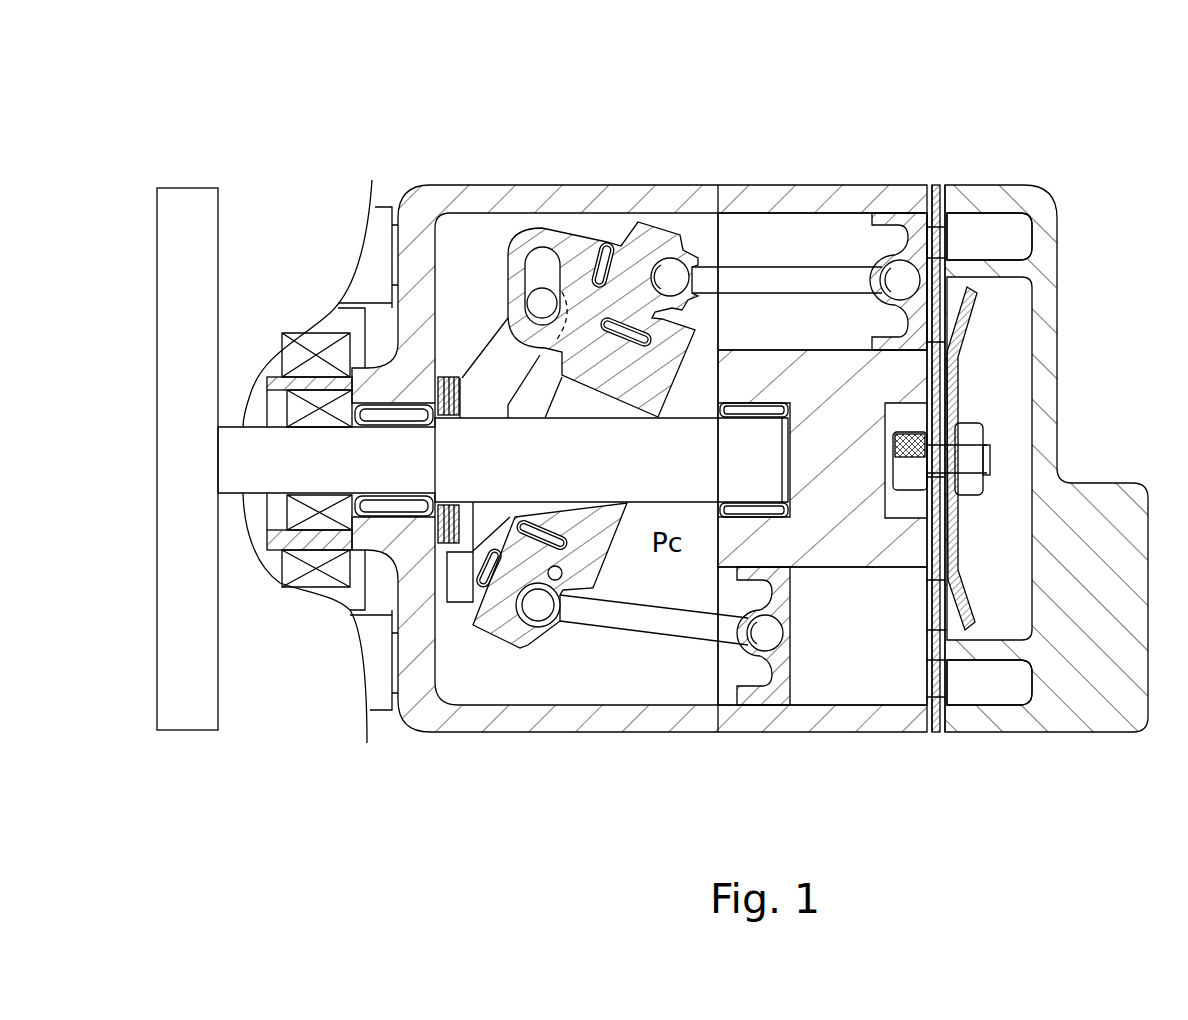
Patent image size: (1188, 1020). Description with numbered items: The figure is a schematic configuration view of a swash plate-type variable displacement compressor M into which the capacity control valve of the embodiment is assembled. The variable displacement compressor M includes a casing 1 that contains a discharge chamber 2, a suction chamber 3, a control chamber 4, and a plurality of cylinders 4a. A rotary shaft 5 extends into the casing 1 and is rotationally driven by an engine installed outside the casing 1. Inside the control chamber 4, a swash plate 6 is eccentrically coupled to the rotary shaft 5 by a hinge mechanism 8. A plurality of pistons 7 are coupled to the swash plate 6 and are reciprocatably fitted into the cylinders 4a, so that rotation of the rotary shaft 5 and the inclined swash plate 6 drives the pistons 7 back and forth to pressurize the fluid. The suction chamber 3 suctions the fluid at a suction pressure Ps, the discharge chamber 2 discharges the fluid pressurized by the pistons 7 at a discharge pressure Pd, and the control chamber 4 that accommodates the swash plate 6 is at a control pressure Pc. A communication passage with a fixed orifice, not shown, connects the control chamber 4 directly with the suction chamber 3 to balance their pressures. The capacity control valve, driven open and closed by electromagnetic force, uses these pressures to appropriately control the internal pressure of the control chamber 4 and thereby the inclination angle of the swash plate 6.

The casing 1 is at (447, 184).
The discharge chamber 2 is at (1002, 380).
The suction chamber 3 is at (1017, 235).
The control chamber 4 is at (633, 683).
The cylinders 4a is at (800, 227).
The rotary shaft 5 is at (467, 463).
The swash plate 6 is at (627, 353).
The pistons 7 is at (900, 213).
The hinge mechanism 8 is at (485, 370).
The variable displacement compressor M is at (1030, 110).